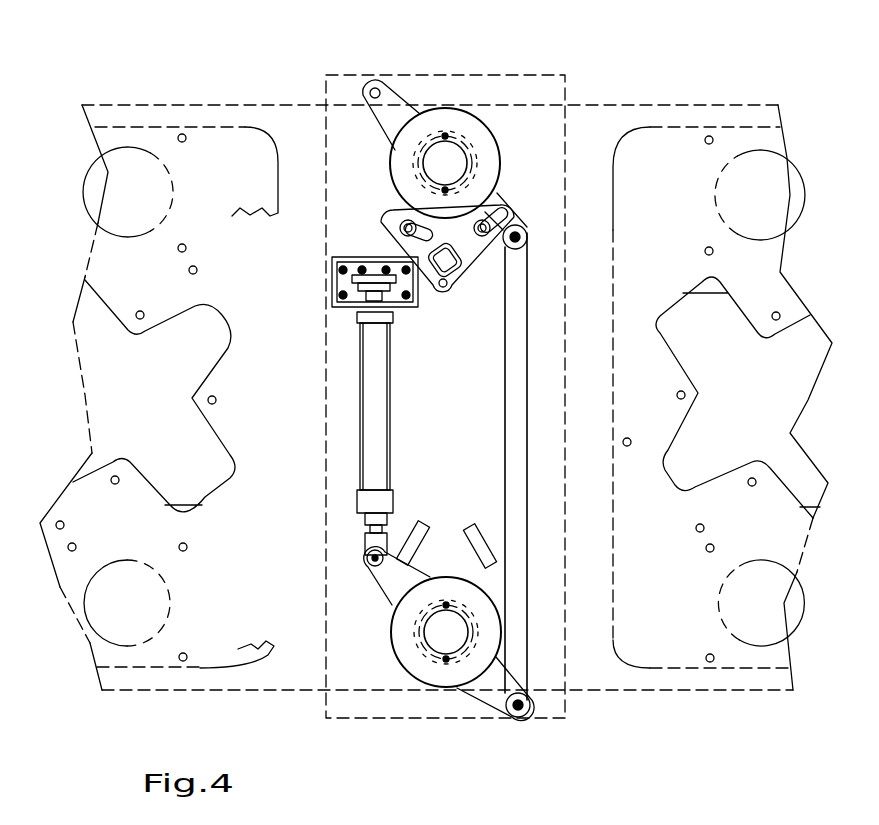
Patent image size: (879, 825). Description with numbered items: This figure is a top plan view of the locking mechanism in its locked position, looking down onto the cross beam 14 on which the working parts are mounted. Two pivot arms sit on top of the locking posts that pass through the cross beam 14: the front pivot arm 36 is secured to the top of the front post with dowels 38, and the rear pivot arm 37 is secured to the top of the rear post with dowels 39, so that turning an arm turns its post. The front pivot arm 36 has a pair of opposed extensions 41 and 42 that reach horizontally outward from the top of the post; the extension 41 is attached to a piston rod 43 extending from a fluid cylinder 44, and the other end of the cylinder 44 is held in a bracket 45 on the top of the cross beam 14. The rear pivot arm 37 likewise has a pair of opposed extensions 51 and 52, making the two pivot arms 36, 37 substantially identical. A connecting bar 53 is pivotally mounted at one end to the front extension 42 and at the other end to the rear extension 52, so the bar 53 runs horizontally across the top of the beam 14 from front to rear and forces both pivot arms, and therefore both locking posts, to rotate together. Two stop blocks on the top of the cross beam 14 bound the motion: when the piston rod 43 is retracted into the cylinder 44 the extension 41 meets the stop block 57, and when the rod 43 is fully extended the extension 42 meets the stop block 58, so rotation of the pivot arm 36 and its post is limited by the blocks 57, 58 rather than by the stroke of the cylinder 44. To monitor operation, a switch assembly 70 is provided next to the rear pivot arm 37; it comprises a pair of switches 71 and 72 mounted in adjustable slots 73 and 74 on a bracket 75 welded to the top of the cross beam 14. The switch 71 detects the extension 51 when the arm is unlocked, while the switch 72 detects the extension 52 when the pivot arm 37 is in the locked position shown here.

The cross beam 14 is at (265, 130).
The front pivot arm 36 is at (435, 680).
The rear pivot arm 37 is at (445, 118).
The dowels 38 is at (447, 603).
The dowels 39 is at (445, 190).
The extension 41 is at (390, 587).
The extension 42 is at (497, 707).
The piston rod 43 is at (365, 530).
The fluid cylinder 44 is at (373, 427).
The bracket 45 is at (333, 283).
The extension 51 is at (393, 100).
The extension 52 is at (522, 232).
The connecting bar 53 is at (517, 496).
The stop block 57 is at (412, 522).
The stop block 58 is at (486, 523).
The switch assembly 70 is at (381, 245).
The switch 71 is at (387, 210).
The switch 72 is at (488, 262).
The adjustable slot 73 is at (385, 213).
The adjustable slot 74 is at (452, 278).
The bracket 75 is at (412, 240).